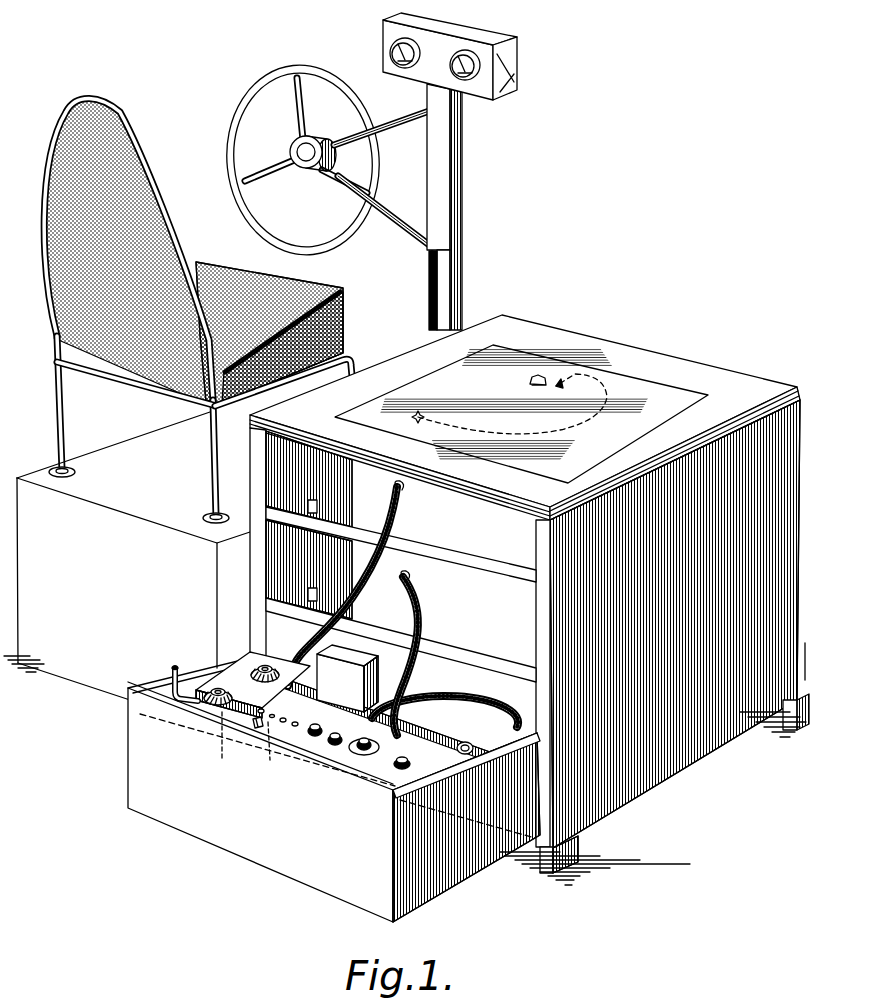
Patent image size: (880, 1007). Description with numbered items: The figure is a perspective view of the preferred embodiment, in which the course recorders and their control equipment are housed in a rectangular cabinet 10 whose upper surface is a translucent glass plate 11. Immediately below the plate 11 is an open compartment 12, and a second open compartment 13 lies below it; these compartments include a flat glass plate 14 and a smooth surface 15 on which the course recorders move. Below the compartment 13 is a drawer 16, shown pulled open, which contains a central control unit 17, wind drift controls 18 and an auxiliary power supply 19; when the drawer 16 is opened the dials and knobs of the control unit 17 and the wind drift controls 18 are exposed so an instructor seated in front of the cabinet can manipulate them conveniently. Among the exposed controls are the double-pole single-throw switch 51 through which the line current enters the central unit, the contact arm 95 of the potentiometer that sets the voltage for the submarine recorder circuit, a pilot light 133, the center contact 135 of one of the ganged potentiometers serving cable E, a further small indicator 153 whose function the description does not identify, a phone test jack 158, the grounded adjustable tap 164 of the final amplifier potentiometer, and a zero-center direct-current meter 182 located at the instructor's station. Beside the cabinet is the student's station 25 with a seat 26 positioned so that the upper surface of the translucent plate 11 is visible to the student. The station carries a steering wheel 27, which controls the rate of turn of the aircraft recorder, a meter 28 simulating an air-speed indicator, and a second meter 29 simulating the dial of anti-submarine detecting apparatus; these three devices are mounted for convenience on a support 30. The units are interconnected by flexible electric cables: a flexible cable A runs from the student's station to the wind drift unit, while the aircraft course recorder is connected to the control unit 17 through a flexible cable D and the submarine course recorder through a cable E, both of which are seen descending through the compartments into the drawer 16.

The cabinet 10 is at (681, 746).
The translucent glass plate 11 is at (546, 356).
The open compartment 12 is at (280, 483).
The second open compartment 13 is at (288, 565).
The flat glass plate 14 is at (468, 566).
The smooth surface 15 is at (460, 651).
The drawer 16 is at (249, 838).
The central control unit 17 is at (323, 750).
The wind drift controls 18 is at (214, 688).
The auxiliary power supply 19 is at (347, 678).
The student's station 25 is at (175, 128).
The seat 26 is at (351, 291).
The steering wheel 27 is at (281, 71).
The meter 28 is at (392, 47).
The second meter 29 is at (484, 62).
The support 30 is at (463, 263).
The double-pole, single-throw switch 51 is at (258, 725).
The contact arm 95 is at (411, 763).
The pilot light 133 is at (291, 728).
The center contact 135 is at (365, 758).
The indicator 153 is at (311, 741).
The phone test jack 158 is at (258, 713).
The central adjustable tap 164 is at (337, 752).
The meter 182 is at (465, 741).
The flexible cable A is at (440, 293).
The flexible cable D is at (398, 516).
The cable E is at (421, 618).